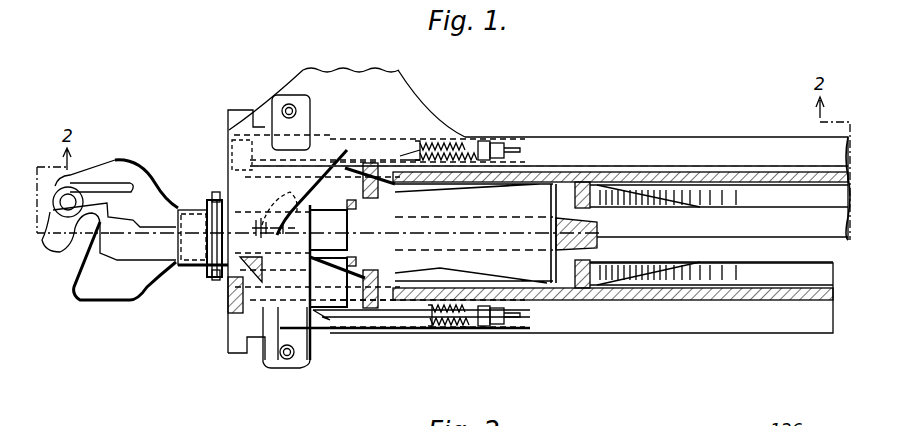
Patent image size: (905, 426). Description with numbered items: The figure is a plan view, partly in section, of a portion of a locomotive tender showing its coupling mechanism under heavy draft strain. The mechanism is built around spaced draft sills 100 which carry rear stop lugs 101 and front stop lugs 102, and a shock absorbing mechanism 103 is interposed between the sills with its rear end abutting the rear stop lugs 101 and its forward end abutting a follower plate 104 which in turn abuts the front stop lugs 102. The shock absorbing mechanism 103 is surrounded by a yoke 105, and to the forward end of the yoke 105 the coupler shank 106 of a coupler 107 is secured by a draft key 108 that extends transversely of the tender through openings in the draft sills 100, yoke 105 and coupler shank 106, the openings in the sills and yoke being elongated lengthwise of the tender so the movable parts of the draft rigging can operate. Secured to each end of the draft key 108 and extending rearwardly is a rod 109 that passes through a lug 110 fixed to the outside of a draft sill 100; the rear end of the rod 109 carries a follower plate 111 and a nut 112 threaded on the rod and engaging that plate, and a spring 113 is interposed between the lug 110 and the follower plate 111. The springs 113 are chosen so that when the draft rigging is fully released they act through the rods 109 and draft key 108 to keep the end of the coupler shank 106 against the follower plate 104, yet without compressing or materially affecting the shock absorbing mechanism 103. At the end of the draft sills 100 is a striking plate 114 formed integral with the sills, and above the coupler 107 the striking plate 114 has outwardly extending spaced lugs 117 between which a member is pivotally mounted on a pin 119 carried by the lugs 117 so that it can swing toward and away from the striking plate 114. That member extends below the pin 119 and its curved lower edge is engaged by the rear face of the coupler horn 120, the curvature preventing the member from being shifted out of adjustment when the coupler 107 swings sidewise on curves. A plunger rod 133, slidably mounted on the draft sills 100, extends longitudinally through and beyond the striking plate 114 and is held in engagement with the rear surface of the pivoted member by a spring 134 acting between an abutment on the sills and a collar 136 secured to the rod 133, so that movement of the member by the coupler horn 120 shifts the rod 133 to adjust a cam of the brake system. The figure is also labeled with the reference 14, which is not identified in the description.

The latch handle 14 is at (113, 158).
The draft sills 100 is at (678, 140).
The rear stop lugs 101 is at (600, 207).
The front stop lugs 102 is at (345, 170).
The shock absorbing mechanism 103 is at (475, 233).
The follower plate 104 is at (510, 262).
The yoke 105 is at (599, 240).
The coupler shank 106 is at (342, 310).
The coupler 107 is at (105, 290).
The draft key 108 is at (272, 372).
The rod 109 is at (338, 140).
The lug 110 is at (430, 138).
The follower plate 111 is at (490, 141).
The nut 112 is at (503, 148).
The spring 113 is at (515, 160).
The striking plate 114 is at (230, 307).
The lugs 117 is at (165, 231).
The pin 119 is at (213, 200).
The coupler horn 120 is at (150, 232).
The plunger rod 133 is at (224, 190).
The spring 134 is at (283, 220).
The collar 136 is at (262, 226).